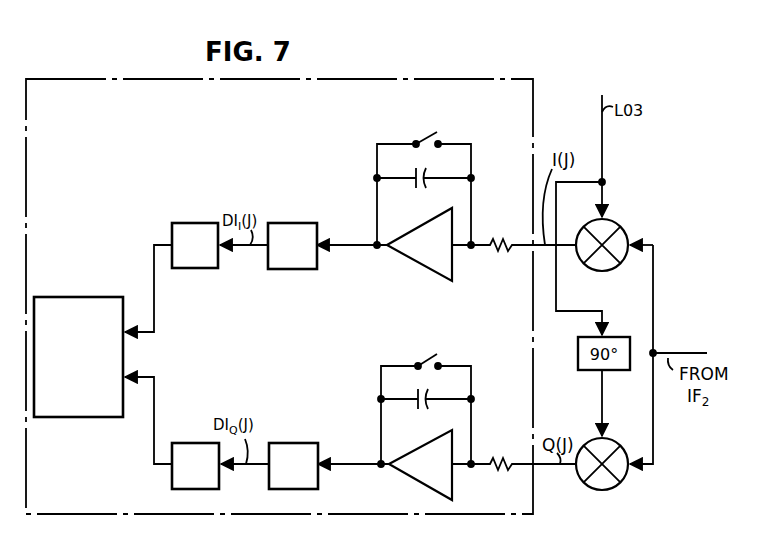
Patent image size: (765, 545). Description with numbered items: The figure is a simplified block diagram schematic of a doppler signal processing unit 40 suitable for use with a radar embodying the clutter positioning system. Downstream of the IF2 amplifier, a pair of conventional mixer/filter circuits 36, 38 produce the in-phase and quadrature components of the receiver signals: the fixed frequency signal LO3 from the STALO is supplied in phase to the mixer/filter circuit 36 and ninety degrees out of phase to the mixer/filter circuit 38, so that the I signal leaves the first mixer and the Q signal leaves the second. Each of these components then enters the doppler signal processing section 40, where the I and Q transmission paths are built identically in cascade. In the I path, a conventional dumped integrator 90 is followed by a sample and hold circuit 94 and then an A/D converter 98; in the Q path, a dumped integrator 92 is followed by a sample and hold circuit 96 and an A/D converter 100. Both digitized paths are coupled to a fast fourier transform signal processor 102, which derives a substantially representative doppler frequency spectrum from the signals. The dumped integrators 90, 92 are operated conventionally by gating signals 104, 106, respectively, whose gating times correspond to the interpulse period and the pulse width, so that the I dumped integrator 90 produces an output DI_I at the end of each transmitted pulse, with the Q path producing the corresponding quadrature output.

The doppler signal processing section 40 is at (158, 173).
The mixer/filter circuit 36 is at (616, 222).
The mixer/filter circuit 38 is at (620, 482).
The dumped integrator 90 is at (406, 219).
The dumped integrator 92 is at (406, 441).
The sample and hold circuit 94 is at (298, 223).
The sample and hold circuit 96 is at (293, 443).
The A/D converter 98 is at (193, 223).
The A/D converter 100 is at (201, 443).
The fast fourier transform signal processor 102 is at (82, 417).
The gating signal 104 is at (426, 100).
The gating signal 106 is at (427, 322).